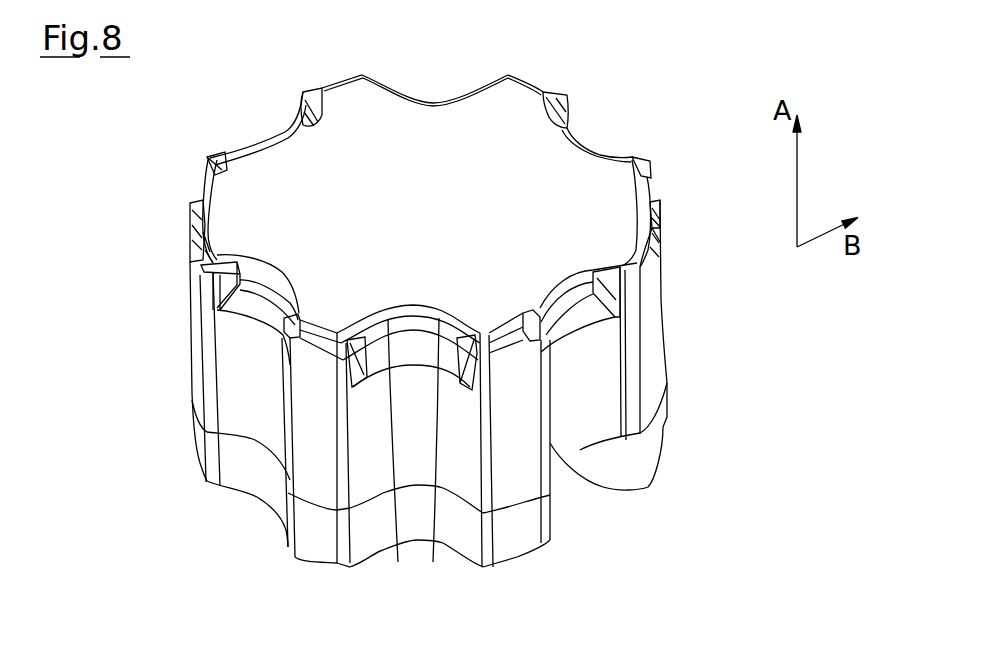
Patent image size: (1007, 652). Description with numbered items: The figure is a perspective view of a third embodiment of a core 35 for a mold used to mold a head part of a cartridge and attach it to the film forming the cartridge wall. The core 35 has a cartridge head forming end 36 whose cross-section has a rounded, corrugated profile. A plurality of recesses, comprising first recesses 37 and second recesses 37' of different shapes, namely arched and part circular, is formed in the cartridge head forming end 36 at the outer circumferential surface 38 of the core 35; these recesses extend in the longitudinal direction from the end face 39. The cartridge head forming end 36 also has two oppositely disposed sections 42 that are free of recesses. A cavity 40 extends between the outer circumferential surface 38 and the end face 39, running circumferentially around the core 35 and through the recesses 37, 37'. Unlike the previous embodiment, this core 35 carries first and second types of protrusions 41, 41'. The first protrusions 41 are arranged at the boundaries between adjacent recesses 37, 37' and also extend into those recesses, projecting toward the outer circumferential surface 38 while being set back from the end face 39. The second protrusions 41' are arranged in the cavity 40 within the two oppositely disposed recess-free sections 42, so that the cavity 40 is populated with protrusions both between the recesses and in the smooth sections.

The core 35 is at (783, 370).
The cartridge head forming end 36 is at (557, 180).
The first recesses 37 is at (416, 322).
The second recesses 37' is at (472, 315).
The outer circumferential surface 38 is at (593, 480).
The end face 39 is at (423, 127).
The cavity 40 is at (637, 253).
The first protrusions 41 is at (427, 321).
The second protrusions 41' is at (430, 213).
The oppositely disposed sections 42 is at (633, 228).